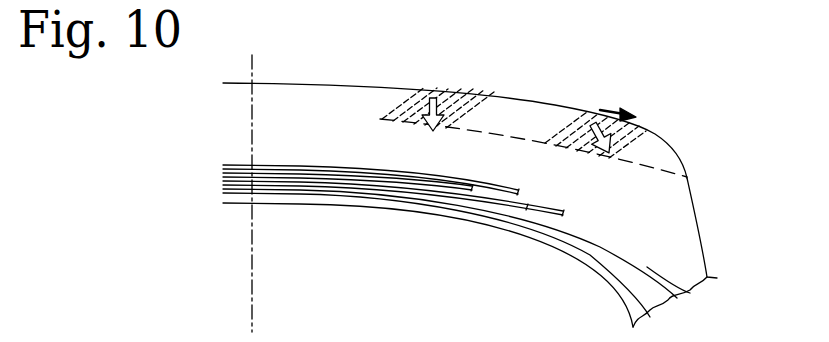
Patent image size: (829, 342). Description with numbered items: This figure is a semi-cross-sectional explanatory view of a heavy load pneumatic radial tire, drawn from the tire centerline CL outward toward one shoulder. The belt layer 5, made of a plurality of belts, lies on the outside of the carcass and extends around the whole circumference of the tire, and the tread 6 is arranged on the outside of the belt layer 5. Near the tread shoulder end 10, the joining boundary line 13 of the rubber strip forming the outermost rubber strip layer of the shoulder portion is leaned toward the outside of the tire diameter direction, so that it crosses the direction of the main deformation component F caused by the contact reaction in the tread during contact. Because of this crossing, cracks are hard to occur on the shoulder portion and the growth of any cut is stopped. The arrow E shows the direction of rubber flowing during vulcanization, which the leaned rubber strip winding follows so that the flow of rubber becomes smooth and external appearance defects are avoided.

The belt layer 5 is at (308, 168).
The tread 6 is at (332, 84).
The tread shoulder end 10 is at (672, 135).
The joining boundary line 13 is at (412, 104).
The tire centerline CL is at (253, 285).
The direction of rubber flowing during vulcanization E is at (610, 110).
The main deformation component F is at (444, 95).